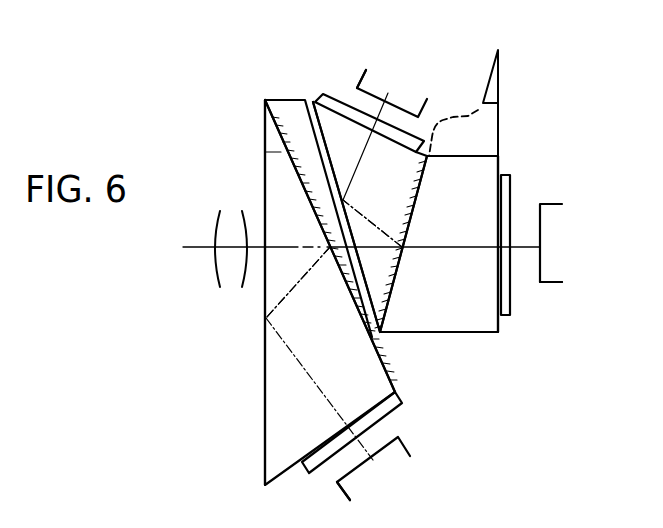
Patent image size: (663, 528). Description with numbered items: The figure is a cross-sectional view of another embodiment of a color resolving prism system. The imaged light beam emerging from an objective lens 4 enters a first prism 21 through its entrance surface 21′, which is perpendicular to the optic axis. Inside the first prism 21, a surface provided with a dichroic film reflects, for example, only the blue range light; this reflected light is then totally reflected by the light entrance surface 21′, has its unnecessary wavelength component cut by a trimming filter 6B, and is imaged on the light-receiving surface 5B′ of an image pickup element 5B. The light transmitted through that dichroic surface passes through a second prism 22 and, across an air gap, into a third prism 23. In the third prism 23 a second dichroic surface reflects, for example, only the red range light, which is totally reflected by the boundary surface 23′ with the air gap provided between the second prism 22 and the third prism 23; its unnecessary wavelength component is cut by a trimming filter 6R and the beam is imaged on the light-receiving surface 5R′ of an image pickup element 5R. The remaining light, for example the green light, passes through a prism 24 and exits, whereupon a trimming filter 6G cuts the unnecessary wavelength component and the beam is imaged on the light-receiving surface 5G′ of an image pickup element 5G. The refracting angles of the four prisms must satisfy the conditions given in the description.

The objective lens 4 is at (233, 230).
The first prism 21 is at (267, 353).
The entrance surface 21′ is at (266, 411).
The second prism 22 is at (265, 152).
The third prism 23 is at (420, 128).
The boundary surface 23′ is at (346, 217).
The prism 24 is at (493, 210).
The trimming filter 6R is at (326, 96).
The trimming filter 6G is at (508, 173).
The trimming filter 6B is at (398, 398).
The image pickup element 5R is at (392, 93).
The light-receiving surface 5R′ is at (360, 92).
The image pickup element 5G is at (556, 243).
The light-receiving surface 5G′ is at (537, 268).
The image pickup element 5B is at (373, 473).
The light-receiving surface 5B′ is at (347, 474).